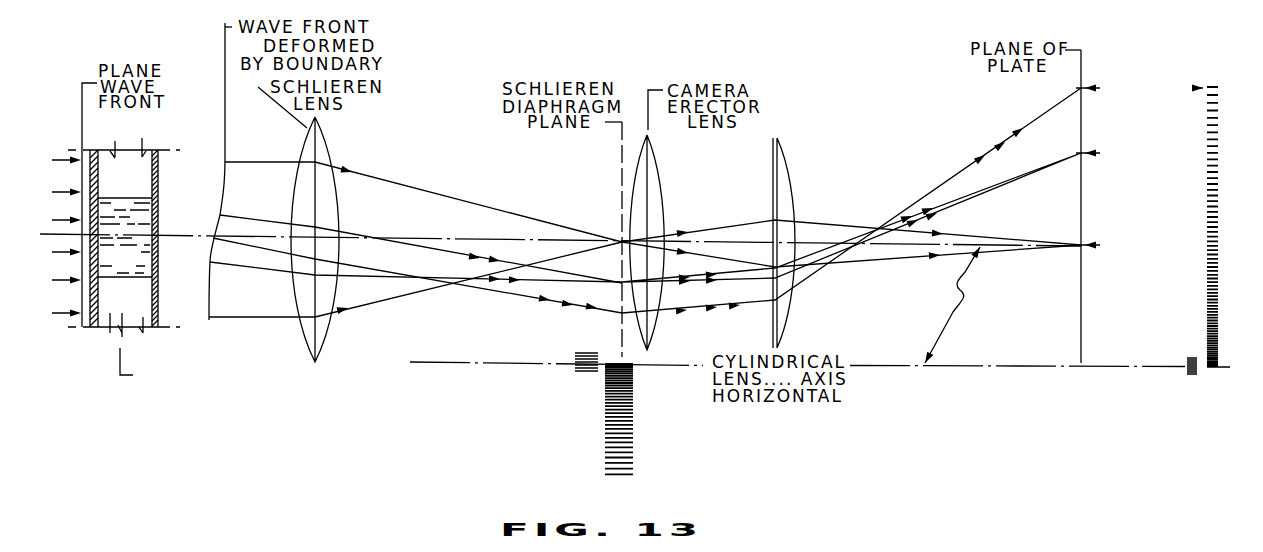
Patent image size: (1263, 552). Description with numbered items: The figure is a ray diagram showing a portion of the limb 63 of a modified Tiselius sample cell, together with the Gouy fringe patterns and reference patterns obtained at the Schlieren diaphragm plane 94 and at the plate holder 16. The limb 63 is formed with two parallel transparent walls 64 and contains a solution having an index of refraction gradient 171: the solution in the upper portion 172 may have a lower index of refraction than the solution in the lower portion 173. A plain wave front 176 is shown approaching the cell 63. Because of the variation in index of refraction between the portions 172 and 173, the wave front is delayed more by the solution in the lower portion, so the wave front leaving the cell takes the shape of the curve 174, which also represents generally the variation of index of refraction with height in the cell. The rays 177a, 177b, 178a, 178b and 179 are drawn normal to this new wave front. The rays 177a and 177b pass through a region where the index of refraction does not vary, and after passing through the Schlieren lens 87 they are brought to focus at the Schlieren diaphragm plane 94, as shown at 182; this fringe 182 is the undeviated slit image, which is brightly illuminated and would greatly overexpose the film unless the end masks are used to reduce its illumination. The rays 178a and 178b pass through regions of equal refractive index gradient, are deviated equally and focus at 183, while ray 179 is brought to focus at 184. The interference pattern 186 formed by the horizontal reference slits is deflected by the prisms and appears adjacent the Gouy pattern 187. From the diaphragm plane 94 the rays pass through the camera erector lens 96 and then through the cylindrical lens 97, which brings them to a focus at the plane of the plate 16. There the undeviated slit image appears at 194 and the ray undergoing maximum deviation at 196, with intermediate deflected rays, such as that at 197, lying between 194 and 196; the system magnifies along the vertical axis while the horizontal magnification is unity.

The limb 63 is at (127, 267).
The parallel walls 64 is at (143, 225).
The upper portion 172 is at (148, 200).
The index of refraction gradient 171 is at (152, 233).
The lower portion 173 is at (151, 262).
The plain wave front 176 is at (69, 254).
The curve 174 is at (234, 184).
The ray 177a is at (423, 185).
The ray 177b is at (415, 302).
The ray 178a is at (421, 236).
The ray 178b is at (416, 282).
The ray 179 is at (417, 265).
The Schlieren lens 87 is at (337, 239).
The Schlieren diaphragm plane 94 is at (601, 239).
The fringe 182 is at (829, 232).
The focus 183 is at (829, 219).
The focus 184 is at (829, 212).
The camera erector lens 96 is at (666, 242).
The cylindrical lens 97 is at (799, 243).
The plate holder 16 is at (1060, 206).
The maximum deviation ray image 196 is at (1110, 95).
The intermediate deflected ray image 197 is at (1117, 158).
The undeviated slit image 194 is at (1115, 247).
The interference pattern 186 is at (564, 366).
The Gouy pattern 187 is at (596, 419).